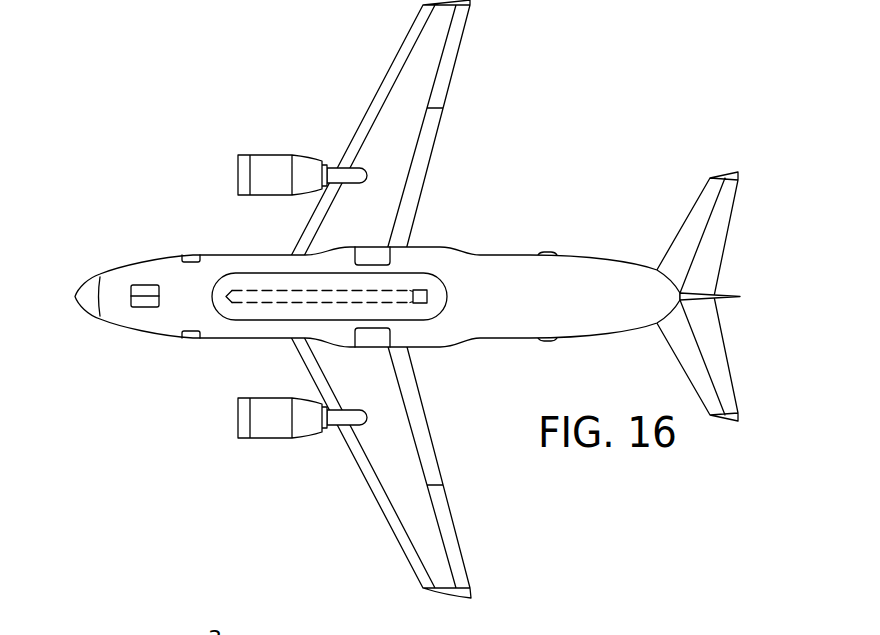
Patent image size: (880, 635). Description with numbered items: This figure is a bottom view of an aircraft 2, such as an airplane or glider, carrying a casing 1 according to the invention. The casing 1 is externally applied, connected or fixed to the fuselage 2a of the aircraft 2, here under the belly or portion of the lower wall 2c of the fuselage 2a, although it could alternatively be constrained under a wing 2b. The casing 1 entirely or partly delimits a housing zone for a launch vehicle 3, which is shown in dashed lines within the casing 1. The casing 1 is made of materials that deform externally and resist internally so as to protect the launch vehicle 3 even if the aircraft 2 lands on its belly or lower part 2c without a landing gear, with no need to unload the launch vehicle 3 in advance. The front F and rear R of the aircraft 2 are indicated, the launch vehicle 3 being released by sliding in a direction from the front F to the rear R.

The casing 1 is at (231, 284).
The aircraft 2 is at (539, 206).
The fuselage 2a is at (470, 340).
The wing 2b is at (423, 158).
The lower part / lower wall of the fuselage 2c is at (467, 278).
The launch vehicle 3 is at (260, 296).
The front of the aircraft F is at (84, 304).
The rear of the aircraft R is at (710, 318).